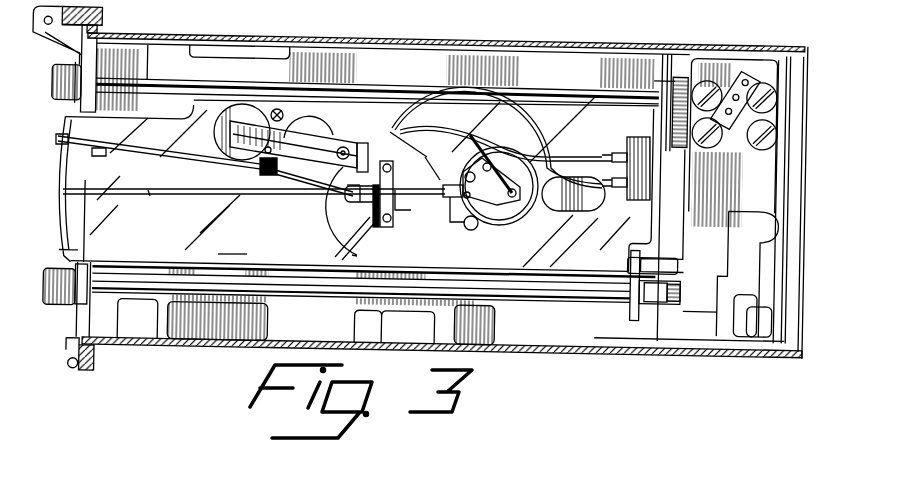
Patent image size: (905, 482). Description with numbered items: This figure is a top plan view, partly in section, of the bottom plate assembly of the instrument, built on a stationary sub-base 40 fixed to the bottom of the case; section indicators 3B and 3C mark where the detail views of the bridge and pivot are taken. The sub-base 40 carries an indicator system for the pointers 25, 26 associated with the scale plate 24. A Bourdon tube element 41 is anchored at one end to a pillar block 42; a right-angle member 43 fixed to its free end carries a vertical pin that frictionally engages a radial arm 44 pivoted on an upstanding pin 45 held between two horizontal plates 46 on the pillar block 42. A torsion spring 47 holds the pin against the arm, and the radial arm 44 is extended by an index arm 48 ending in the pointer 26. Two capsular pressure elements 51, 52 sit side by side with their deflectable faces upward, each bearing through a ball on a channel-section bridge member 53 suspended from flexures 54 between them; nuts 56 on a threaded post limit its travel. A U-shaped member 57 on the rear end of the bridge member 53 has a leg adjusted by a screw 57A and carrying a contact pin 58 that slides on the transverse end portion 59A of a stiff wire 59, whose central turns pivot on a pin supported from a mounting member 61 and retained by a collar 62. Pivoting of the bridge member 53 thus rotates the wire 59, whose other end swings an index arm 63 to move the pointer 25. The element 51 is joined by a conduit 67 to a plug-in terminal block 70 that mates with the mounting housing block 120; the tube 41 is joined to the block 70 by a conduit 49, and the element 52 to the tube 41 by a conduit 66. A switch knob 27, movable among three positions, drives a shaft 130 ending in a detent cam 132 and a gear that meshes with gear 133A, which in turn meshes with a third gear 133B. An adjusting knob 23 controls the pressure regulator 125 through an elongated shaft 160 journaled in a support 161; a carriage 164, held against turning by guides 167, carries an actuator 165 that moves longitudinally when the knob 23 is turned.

The adjusting knob 23 is at (56, 293).
The scale plate 24 is at (66, 212).
The indicating pointer 25 is at (65, 191).
The indicating pointer 26 is at (62, 141).
The switch knob 27 is at (54, 85).
The stationary sub-base 40 is at (232, 244).
The Bourdon tube element 41 is at (496, 230).
The pillar block 42 is at (472, 140).
The right-angle member 43 is at (452, 210).
The radial arm 44 is at (455, 186).
The upstanding pin 45 is at (478, 204).
The horizontal plates 46 is at (477, 197).
The torsion spring 47 is at (425, 156).
The index arm 48 is at (99, 148).
The conduit 49 is at (582, 156).
The capsular pressure element 51 is at (222, 145).
The capsular pressure element 52 is at (305, 186).
The bridge member 53 is at (302, 159).
The flexures 54 is at (288, 116).
The nuts 56 is at (345, 151).
The U-shaped member 57 is at (365, 158).
The screw 57A is at (394, 172).
The contact pin 58 is at (365, 259).
The wire 59 is at (350, 212).
The transverse horizontal end portion 59A is at (347, 187).
The mounting member 61 is at (379, 221).
The collar 62 is at (399, 204).
The index arm 63 is at (150, 197).
The conduit 66 is at (397, 130).
The conduit 67 is at (508, 119).
The plug-in terminal block 70 is at (638, 137).
The mounting housing block 120 is at (812, 64).
The pressure regulator 125 is at (694, 314).
The shaft 130 is at (373, 87).
The detent cam 132 is at (670, 88).
The meshing gear 133A is at (693, 87).
The third gear 133B is at (687, 142).
The elongated shaft 160 is at (488, 284).
The support 161 is at (634, 308).
The carriage 164 is at (660, 296).
The actuator 165 is at (680, 314).
The guides 167 is at (677, 273).
The section line 3B is at (253, 96).
The section line 3C is at (343, 200).